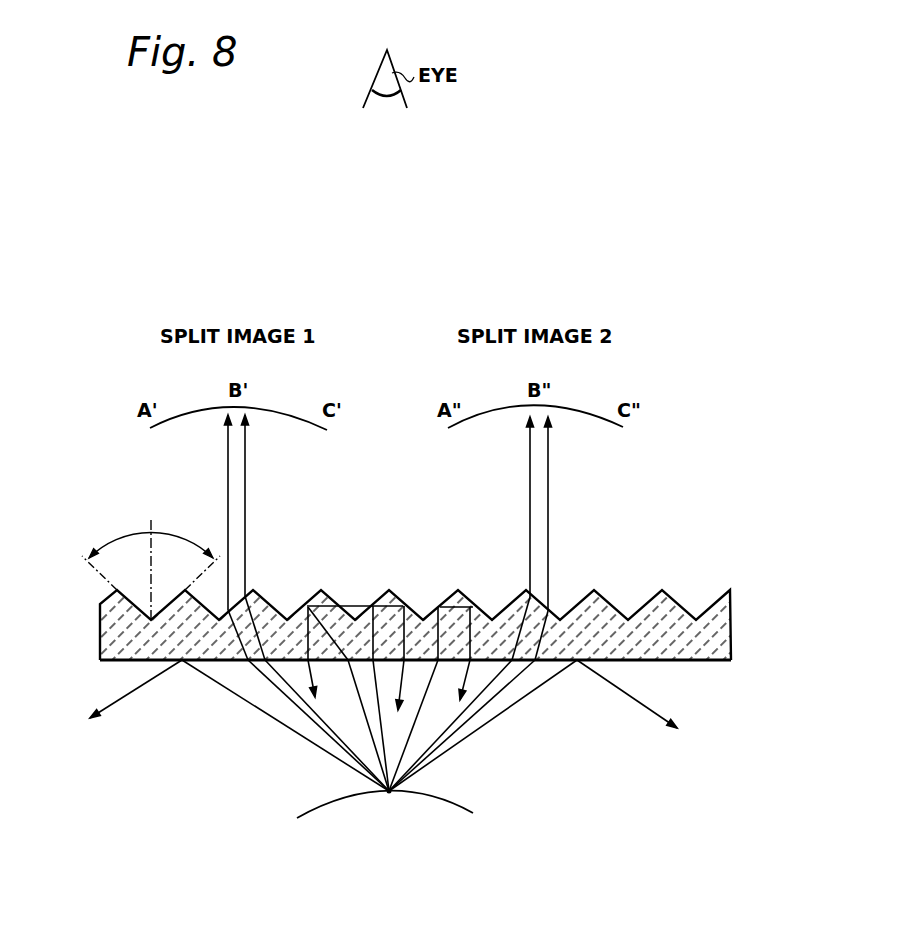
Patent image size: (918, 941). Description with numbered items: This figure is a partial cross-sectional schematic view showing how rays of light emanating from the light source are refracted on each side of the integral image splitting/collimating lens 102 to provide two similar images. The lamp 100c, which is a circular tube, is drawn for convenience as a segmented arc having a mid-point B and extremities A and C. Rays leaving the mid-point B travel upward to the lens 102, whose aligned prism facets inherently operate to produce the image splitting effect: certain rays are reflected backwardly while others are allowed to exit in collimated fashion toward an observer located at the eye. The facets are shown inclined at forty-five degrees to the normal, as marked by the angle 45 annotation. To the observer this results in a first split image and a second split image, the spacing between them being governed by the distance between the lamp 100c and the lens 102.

The lens 102 is at (100, 621).
The lamp 100c is at (410, 817).
The prism facet angle of 45 degrees 45 is at (166, 532).
The mid-point B is at (392, 803).